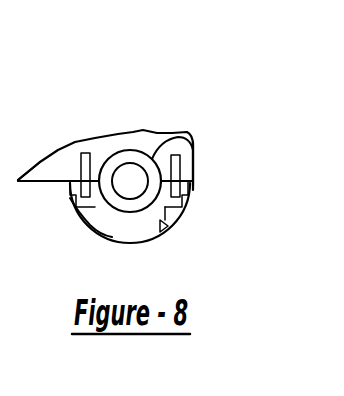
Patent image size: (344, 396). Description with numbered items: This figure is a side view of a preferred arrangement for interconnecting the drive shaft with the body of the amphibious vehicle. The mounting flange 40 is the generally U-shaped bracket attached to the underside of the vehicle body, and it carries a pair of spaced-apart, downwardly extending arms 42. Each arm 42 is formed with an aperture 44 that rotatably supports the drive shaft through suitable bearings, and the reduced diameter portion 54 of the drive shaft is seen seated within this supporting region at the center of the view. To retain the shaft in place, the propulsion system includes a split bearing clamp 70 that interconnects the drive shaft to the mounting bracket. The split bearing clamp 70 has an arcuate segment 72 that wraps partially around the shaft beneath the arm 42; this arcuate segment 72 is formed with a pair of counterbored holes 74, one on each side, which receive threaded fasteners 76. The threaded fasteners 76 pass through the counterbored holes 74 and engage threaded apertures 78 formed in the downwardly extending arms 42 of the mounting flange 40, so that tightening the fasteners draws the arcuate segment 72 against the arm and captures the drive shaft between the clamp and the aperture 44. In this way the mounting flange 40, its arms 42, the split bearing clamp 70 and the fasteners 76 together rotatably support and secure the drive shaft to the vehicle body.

The mounting flange 40 is at (90, 135).
The downwardly extending arm 42 is at (57, 158).
The aperture 44 is at (190, 135).
The reduced diameter portion 54 is at (131, 172).
The split bearing clamp 70 is at (204, 205).
The arcuate segment 72 is at (80, 210).
The counterbored hole 74 is at (78, 207).
The threaded fastener 76 is at (74, 200).
The threaded aperture 78 is at (194, 150).